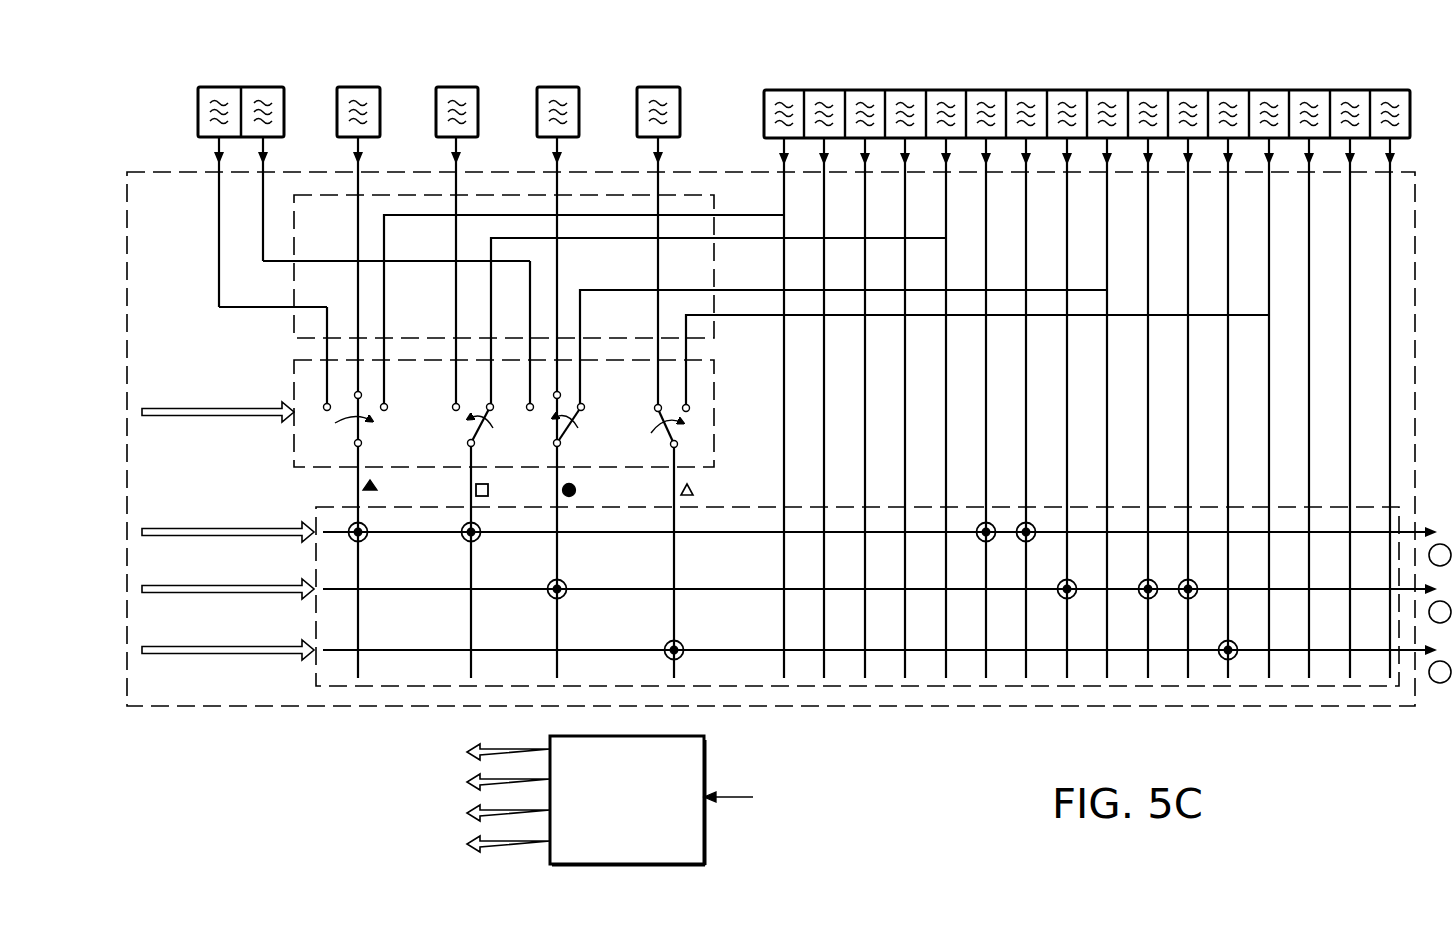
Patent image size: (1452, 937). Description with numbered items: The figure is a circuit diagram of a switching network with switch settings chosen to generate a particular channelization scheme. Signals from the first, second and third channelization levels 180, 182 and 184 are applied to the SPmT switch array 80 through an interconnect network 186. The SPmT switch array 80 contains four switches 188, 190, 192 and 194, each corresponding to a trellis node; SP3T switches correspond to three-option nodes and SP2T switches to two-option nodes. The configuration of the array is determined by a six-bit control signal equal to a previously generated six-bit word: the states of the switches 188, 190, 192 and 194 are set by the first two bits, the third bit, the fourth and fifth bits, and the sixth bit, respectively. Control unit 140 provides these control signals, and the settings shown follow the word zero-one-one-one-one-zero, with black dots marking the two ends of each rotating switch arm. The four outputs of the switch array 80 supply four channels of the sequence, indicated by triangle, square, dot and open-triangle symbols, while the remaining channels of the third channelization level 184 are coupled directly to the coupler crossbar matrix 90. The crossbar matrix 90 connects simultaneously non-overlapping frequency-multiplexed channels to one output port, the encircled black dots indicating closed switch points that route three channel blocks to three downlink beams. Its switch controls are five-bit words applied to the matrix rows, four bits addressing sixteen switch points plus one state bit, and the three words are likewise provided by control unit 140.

The first channelization level 180 is at (285, 80).
The second channelization level 182 is at (692, 80).
The third channelization level 184 is at (1422, 80).
The interconnect network 186 is at (712, 264).
The SPmT switch array 80 is at (714, 411).
The switch 188 is at (353, 439).
The switch 190 is at (479, 439).
The switch 192 is at (554, 439).
The switch 194 is at (663, 439).
The coupler crossbar matrix 90 is at (744, 511).
The control unit 140 is at (704, 741).